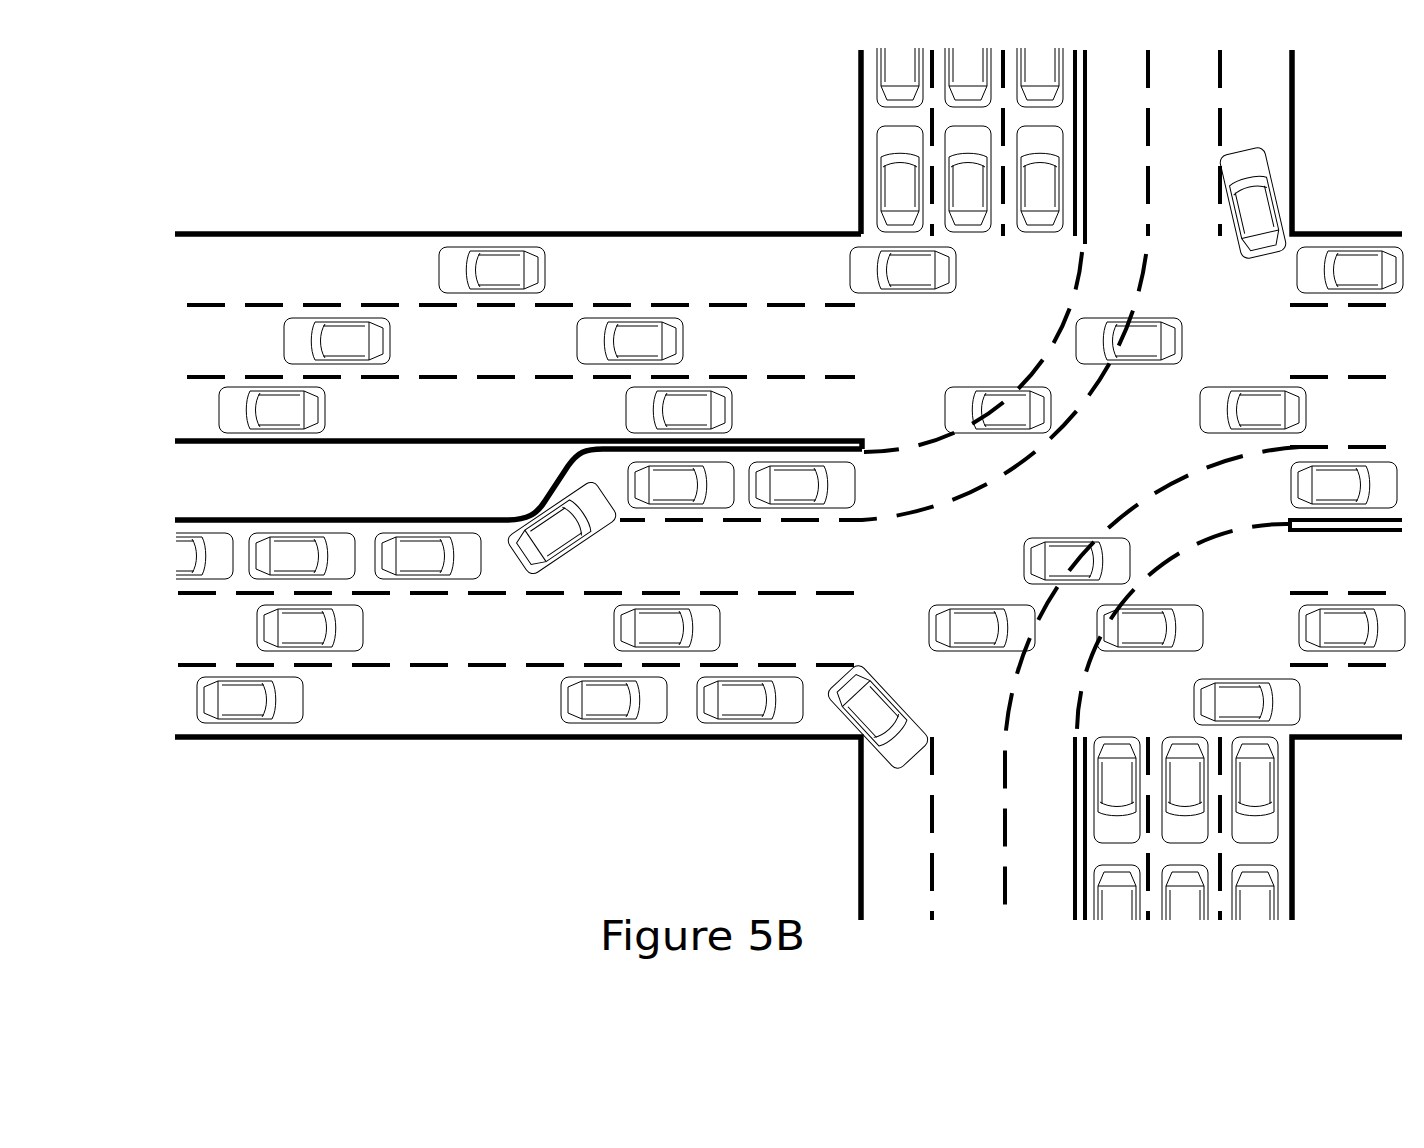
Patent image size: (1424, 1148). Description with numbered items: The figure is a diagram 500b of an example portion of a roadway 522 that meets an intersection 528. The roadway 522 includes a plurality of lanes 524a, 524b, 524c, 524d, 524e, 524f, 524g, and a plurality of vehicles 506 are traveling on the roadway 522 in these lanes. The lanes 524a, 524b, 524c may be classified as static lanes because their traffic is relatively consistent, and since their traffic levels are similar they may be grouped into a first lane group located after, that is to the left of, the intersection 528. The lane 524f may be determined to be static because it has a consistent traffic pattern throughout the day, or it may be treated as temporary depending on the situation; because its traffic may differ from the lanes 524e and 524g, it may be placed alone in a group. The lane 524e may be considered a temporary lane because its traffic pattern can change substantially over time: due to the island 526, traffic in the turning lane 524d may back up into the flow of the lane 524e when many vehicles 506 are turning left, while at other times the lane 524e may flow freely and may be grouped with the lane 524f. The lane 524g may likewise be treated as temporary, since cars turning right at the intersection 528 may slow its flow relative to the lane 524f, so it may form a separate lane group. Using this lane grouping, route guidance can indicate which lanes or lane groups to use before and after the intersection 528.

The diagram 500b is at (160, 108).
The roadway 522 is at (608, 153).
The intersection 528 is at (823, 197).
The island 526 is at (428, 487).
The vehicles 506 is at (502, 260).
The lane 524a is at (173, 272).
The lane 524b is at (173, 344).
The lane 524c is at (173, 412).
The turning lane 524d is at (572, 483).
The lane 524e is at (173, 562).
The lane 524f is at (173, 632).
The lane 524g is at (173, 704).